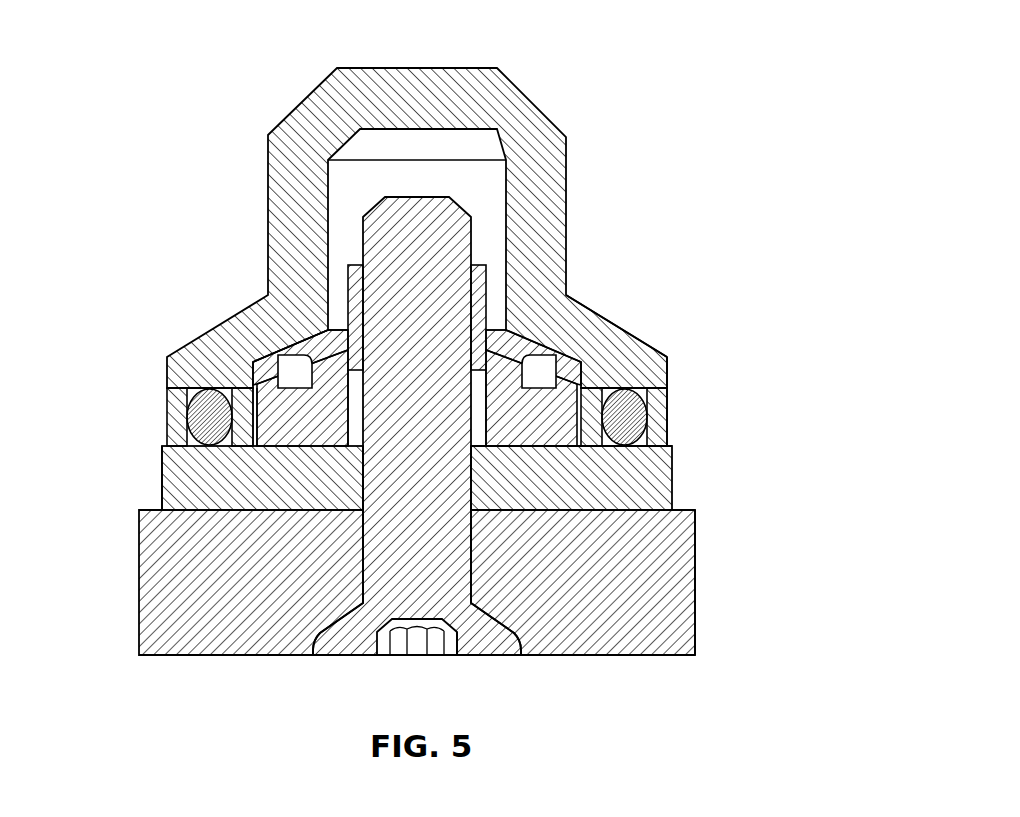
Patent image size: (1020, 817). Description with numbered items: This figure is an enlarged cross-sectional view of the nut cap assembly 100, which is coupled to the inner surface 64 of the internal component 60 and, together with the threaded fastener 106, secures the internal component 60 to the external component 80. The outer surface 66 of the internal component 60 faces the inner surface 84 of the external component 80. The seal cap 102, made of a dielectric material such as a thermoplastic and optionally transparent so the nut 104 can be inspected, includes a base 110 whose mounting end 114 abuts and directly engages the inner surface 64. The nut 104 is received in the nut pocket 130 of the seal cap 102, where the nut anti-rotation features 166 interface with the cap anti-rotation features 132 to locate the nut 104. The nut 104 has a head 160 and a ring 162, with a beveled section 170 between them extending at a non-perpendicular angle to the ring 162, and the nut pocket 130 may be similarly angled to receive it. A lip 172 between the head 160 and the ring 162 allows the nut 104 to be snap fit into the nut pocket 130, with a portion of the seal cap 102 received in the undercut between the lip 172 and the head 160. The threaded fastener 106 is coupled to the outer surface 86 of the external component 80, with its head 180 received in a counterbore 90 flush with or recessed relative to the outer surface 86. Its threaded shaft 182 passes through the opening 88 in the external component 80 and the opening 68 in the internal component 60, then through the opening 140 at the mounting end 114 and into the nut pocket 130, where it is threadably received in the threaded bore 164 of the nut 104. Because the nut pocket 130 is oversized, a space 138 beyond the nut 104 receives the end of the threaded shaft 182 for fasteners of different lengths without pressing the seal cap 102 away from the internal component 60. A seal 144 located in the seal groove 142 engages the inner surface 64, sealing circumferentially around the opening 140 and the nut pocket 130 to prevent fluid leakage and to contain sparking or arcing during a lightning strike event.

The nut cap assembly 100 is at (658, 33).
The seal cap 102 is at (572, 180).
The nut 104 is at (563, 380).
The threaded fastener 106 is at (428, 196).
The base 110 is at (227, 360).
The mounting end 114 is at (283, 447).
The nut pocket 130 is at (340, 216).
The cap anti-rotation features 132 is at (268, 325).
The space 138 is at (393, 142).
The opening 140 is at (578, 452).
The seal groove 142 is at (648, 390).
The seal 144 is at (648, 421).
The head 160 is at (572, 386).
The ring 162 is at (487, 287).
The threaded bore 164 is at (474, 258).
The nut anti-rotation features 166 is at (262, 378).
The beveled section 170 is at (320, 320).
The lip 172 is at (262, 345).
The threaded shaft 182 is at (472, 338).
The internal component 60 is at (672, 488).
The inner surface 64 is at (668, 438).
The outer surface 66 is at (697, 547).
The opening 68 is at (356, 490).
The external component 80 is at (697, 580).
The inner surface 84 is at (165, 506).
The outer surface 86 is at (143, 658).
The opening 88 is at (478, 565).
The counterbore 90 is at (330, 634).
The head 180 is at (487, 648).